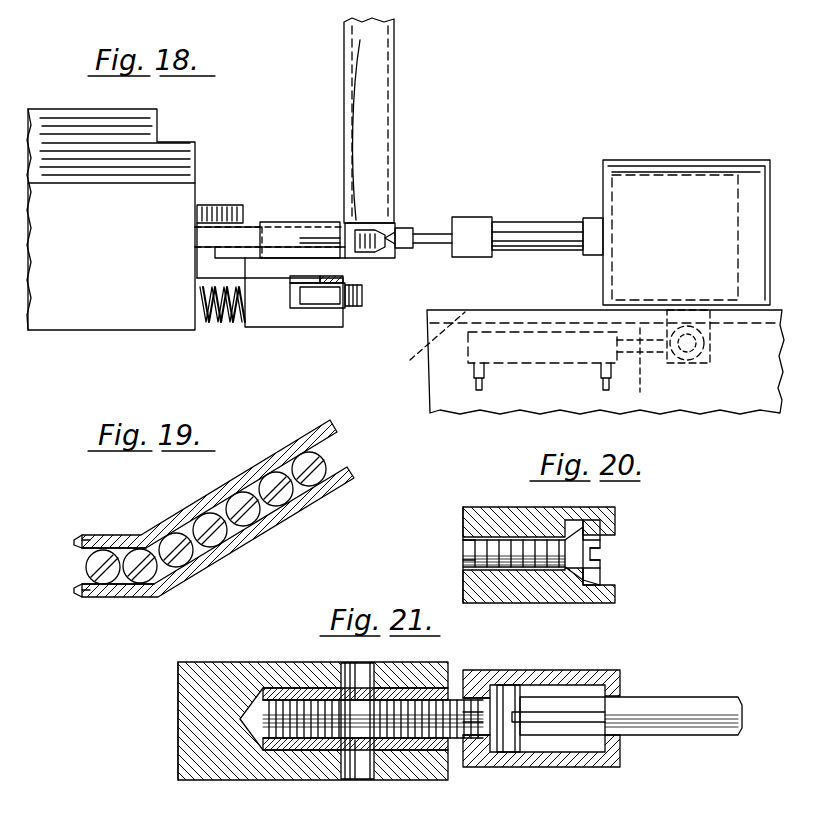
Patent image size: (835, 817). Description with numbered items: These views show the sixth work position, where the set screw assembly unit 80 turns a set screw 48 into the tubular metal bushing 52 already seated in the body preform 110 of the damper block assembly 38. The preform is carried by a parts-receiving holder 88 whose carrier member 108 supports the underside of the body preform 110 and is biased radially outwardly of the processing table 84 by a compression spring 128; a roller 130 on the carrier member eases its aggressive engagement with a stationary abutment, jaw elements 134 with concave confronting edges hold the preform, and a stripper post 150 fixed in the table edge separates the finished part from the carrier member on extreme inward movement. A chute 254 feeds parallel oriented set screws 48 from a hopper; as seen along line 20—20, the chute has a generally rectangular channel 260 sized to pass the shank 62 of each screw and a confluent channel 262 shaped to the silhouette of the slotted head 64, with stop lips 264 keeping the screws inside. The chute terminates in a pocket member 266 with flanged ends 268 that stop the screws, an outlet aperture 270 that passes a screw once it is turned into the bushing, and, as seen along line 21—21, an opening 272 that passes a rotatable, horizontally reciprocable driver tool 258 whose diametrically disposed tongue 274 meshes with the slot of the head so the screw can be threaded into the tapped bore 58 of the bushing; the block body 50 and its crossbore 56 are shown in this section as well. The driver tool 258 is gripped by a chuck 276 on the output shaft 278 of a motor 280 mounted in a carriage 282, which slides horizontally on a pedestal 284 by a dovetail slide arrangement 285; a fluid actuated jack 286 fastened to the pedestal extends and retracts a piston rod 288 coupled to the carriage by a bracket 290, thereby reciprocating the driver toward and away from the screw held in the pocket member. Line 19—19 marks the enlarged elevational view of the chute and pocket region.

In FIG. 18, the section line 19— 19 is at (392, 60).
In FIG. 19, the section line 20— 20 is at (243, 451).
In FIG. 19, the section line 21— 21 is at (125, 506).
In FIG. 21, the damper block assembly 38 is at (172, 756).
In FIG. 18, the set screw 48 is at (370, 222).
In FIG. 19, the set screw 48 is at (280, 460).
In FIG. 20, the set screw 48 is at (523, 575).
In FIG. 21, the set screw 48 is at (478, 750).
In FIG. 21, the block body 50 is at (175, 700).
In FIG. 21, the tubular metal bushing 52 is at (272, 685).
In FIG. 21, the crossbore 56 is at (372, 762).
In FIG. 21, the tapped bore 58 is at (318, 752).
In FIG. 20, the shank 62 is at (465, 560).
In FIG. 20, the slotted head 64 is at (600, 554).
In FIG. 18, the set screw assembly unit 80 is at (510, 200).
In FIG. 18, the processing table 84 is at (133, 311).
In FIG. 18, the parts-receiving holder 88 is at (205, 338).
In FIG. 18, the carrier member 108 is at (302, 342).
In FIG. 18, the body preform 110 is at (312, 224).
In FIG. 18, the compression spring 128 is at (232, 326).
In FIG. 18, the roller 130 is at (352, 312).
In FIG. 18, the jaw elements 134 is at (243, 232).
In FIG. 18, the stripper post 150 is at (232, 162).
In FIG. 18, the chute 254 is at (341, 88).
In FIG. 19, the chute 254 is at (320, 516).
In FIG. 20, the chute 254 is at (470, 505).
In FIG. 18, the driver tool 258 is at (432, 236).
In FIG. 21, the driver tool 258 is at (700, 693).
In FIG. 20, the channel 260 is at (465, 540).
In FIG. 20, the confluent channel 262 is at (574, 598).
In FIG. 20, the stop lips 264 is at (608, 528).
In FIG. 18, the pocket member 266 is at (350, 224).
In FIG. 19, the pocket member 266 is at (92, 532).
In FIG. 21, the pocket member 266 is at (578, 770).
In FIG. 18, the flanged ends 268 is at (380, 235).
In FIG. 19, the flanged ends 268 is at (82, 570).
In FIG. 18, the outlet aperture 270 is at (353, 258).
In FIG. 21, the opening 272 is at (612, 706).
In FIG. 21, the tongue 274 is at (508, 684).
In FIG. 18, the chuck 276 is at (474, 258).
In FIG. 18, the output shaft 278 is at (528, 238).
In FIG. 18, the motor 280 is at (622, 178).
In FIG. 18, the carriage 282 is at (748, 168).
In FIG. 18, the pedestal 284 is at (726, 410).
In FIG. 18, the dovetail slide arrangement 285 is at (415, 357).
In FIG. 18, the fluid actuated jack 286 is at (527, 368).
In FIG. 18, the piston rod 288 is at (642, 366).
In FIG. 18, the bracket 290 is at (697, 368).